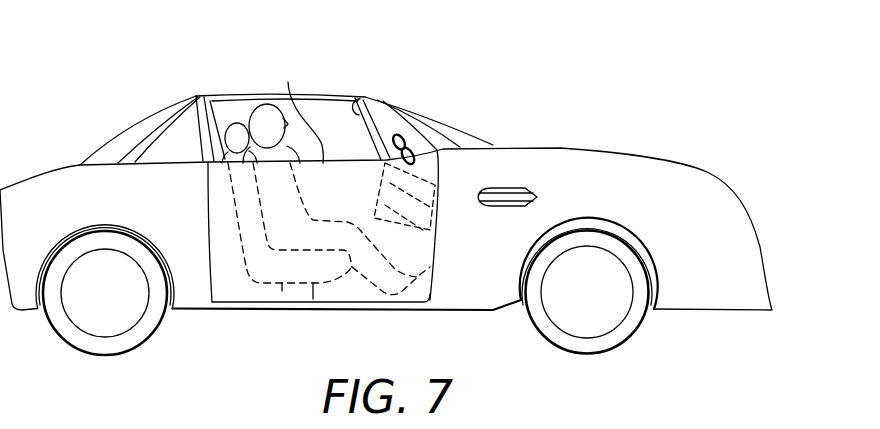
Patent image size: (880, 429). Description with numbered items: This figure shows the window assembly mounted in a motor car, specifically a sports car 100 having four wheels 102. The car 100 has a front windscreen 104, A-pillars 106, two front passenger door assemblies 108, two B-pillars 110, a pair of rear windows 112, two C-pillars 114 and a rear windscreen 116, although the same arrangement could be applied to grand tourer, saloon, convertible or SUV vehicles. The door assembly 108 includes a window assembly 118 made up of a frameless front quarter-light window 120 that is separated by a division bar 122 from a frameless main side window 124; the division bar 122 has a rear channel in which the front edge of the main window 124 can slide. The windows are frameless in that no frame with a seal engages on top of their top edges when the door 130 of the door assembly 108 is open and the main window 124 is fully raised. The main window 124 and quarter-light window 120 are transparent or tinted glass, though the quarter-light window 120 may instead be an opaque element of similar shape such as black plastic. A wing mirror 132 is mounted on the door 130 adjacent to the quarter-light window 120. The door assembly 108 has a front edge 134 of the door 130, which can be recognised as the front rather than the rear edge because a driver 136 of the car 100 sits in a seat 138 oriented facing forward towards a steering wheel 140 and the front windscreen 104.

The sports car 100 is at (509, 113).
The wheels 102 is at (587, 348).
The front windscreen 104 is at (441, 119).
The A-pillars 106 is at (405, 118).
The front passenger door assembly 108 is at (296, 111).
The B-pillar 110 is at (198, 92).
The rear windows 112 is at (180, 122).
The C-pillars 114 is at (147, 138).
The rear windscreen 116 is at (112, 145).
The window assembly 118 is at (262, 85).
The front quarter-light window 120 is at (377, 118).
The division bar 122 is at (357, 99).
The main side window 124 is at (310, 108).
The door 130 is at (228, 293).
The wing mirror 132 is at (435, 167).
The front edge 134 is at (433, 256).
The driver 136 is at (395, 305).
The seat 138 is at (330, 292).
The steering wheel 140 is at (438, 222).